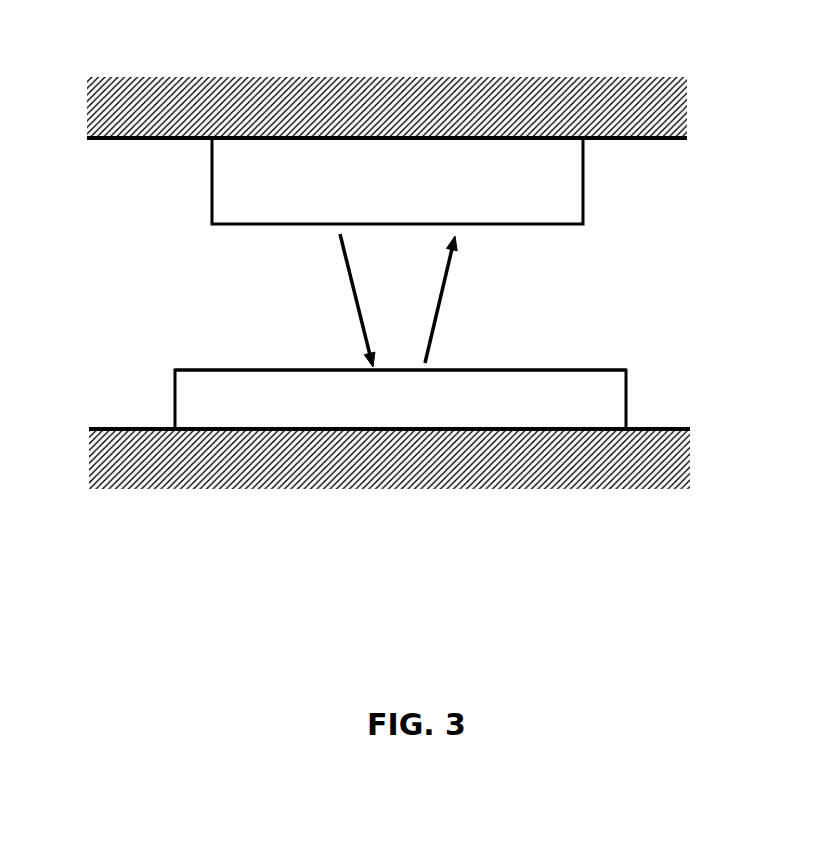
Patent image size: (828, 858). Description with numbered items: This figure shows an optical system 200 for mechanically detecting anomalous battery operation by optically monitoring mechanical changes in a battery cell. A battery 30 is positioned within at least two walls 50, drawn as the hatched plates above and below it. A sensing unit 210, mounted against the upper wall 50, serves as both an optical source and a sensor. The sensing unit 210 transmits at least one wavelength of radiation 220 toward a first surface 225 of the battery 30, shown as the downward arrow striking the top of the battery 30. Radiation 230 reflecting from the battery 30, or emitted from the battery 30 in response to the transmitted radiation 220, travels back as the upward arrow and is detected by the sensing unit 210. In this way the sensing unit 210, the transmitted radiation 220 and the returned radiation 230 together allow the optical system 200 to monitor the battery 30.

The optical system 200 is at (143, 45).
The walls 50 is at (388, 78).
The sensing unit 210 is at (397, 181).
The transmitted radiation 220 is at (358, 322).
The reflected radiation 230 is at (440, 318).
The battery 30 is at (400, 399).
The first surface 225 is at (197, 368).